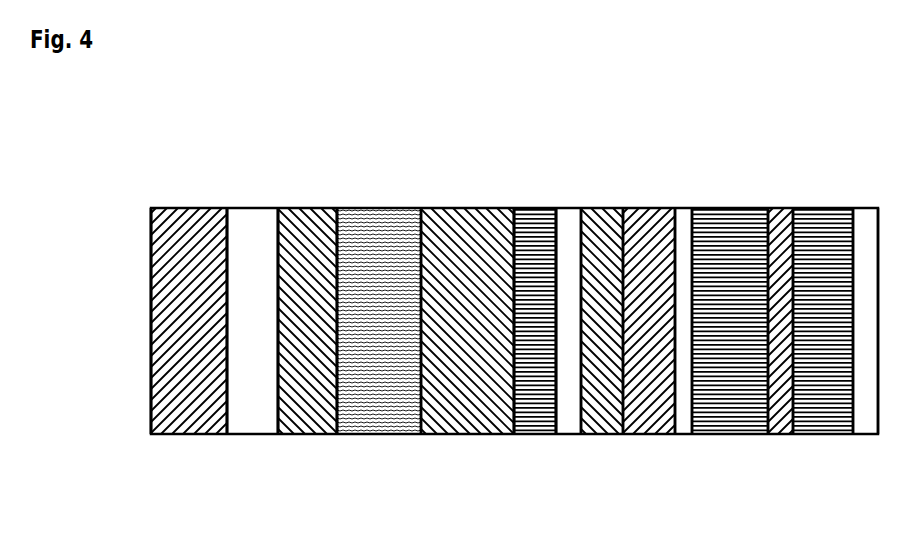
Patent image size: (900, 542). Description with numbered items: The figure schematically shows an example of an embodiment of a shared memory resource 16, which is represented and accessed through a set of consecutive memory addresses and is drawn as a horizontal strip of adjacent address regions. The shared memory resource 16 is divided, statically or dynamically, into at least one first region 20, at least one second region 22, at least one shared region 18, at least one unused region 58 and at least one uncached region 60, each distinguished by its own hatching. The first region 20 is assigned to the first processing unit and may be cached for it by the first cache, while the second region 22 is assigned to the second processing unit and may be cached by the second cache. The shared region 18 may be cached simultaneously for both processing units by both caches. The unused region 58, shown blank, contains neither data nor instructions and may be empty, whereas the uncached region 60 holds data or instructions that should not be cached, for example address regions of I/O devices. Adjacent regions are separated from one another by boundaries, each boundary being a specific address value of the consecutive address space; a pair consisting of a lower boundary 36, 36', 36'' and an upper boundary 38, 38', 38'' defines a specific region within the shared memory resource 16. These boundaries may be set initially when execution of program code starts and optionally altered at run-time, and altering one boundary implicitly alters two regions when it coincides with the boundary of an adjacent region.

The shared memory resource 16 is at (148, 524).
The shared region 18 is at (372, 434).
The first region 20 is at (170, 434).
The second region 22 is at (290, 434).
The lower boundary 36 is at (133, 292).
The upper boundary 38 is at (208, 292).
The lower boundary 36' is at (255, 275).
The upper boundary 38' is at (315, 275).
The lower boundary 36'' is at (488, 292).
The upper boundary 38'' is at (581, 292).
The unused region 58 is at (257, 434).
The uncached region 60 is at (543, 434).